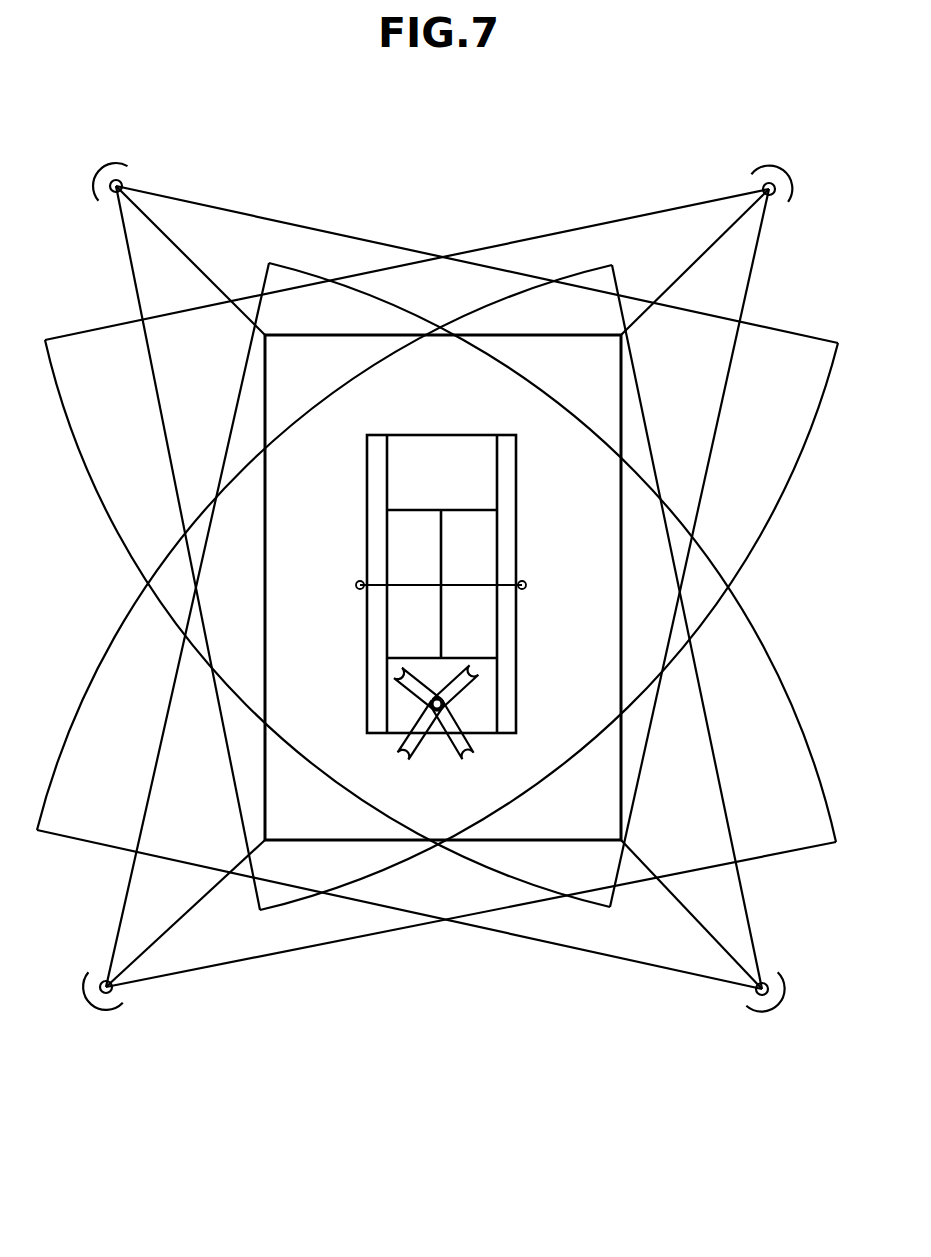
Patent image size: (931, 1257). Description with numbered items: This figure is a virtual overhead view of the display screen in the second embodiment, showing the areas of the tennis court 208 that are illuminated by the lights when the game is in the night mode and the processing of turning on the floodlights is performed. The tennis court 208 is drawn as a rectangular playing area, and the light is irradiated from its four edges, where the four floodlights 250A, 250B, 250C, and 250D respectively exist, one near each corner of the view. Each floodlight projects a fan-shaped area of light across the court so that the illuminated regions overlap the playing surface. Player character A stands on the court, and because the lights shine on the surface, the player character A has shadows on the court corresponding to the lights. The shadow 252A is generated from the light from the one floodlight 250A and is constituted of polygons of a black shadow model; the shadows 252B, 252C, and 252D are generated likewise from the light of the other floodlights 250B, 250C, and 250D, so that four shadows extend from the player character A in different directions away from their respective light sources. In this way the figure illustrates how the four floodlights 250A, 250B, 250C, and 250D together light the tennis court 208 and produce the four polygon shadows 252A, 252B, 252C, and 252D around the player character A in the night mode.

The floodlight 250A is at (115, 1003).
The floodlight 250B is at (747, 1005).
The floodlight 250C is at (777, 163).
The floodlight 250D is at (120, 162).
The tennis court 208 is at (597, 712).
The shadow 252A is at (477, 678).
The shadow 252B is at (402, 682).
The shadow 252C is at (405, 752).
The shadow 252D is at (463, 758).
The player character A is at (437, 697).